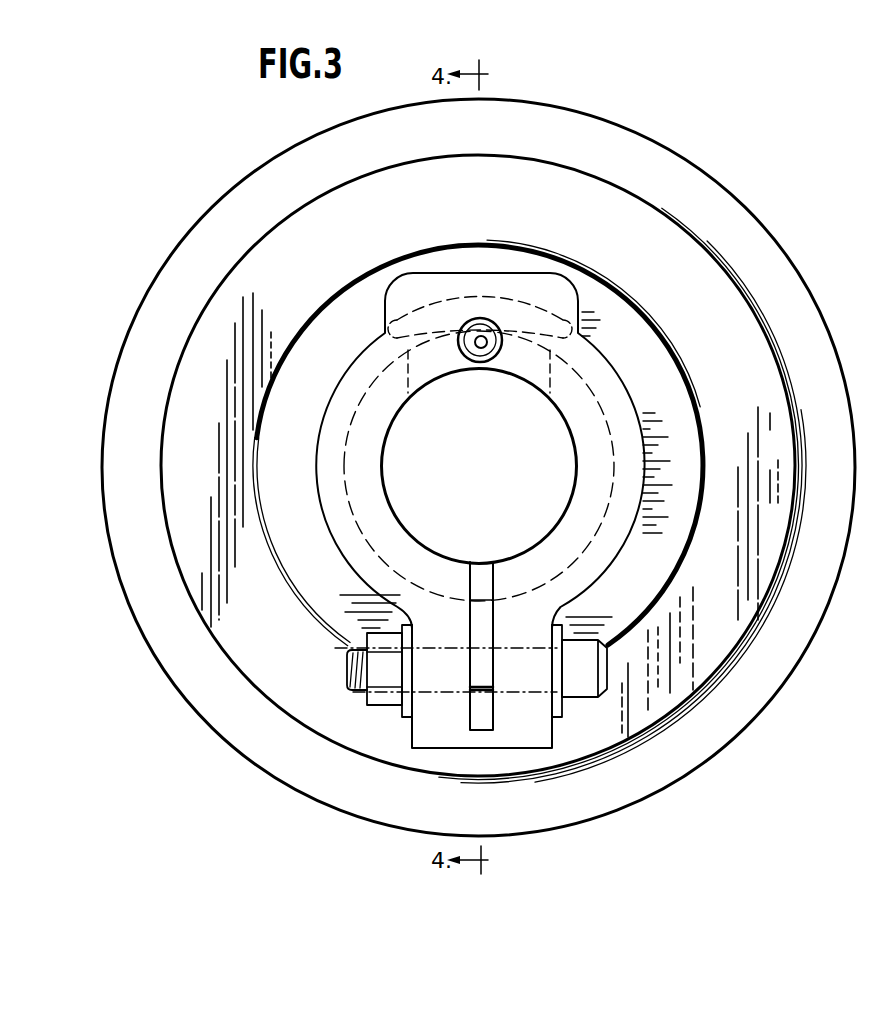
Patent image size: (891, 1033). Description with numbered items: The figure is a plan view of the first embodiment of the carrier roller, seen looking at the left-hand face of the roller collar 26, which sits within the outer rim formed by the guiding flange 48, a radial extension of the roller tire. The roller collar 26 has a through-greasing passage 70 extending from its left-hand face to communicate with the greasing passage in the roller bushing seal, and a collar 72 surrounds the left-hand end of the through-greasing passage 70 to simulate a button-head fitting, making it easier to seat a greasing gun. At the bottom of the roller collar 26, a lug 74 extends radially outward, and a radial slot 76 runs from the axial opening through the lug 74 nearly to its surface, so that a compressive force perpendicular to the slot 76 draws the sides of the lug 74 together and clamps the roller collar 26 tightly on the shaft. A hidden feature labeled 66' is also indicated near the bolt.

The guiding flange 48 is at (713, 178).
The roller collar 26 is at (535, 277).
The collar 72 is at (463, 331).
The through-greasing passage 70 is at (483, 346).
The hidden pin 66' is at (486, 395).
The radial slot 76 is at (471, 576).
The lug 74 is at (412, 730).